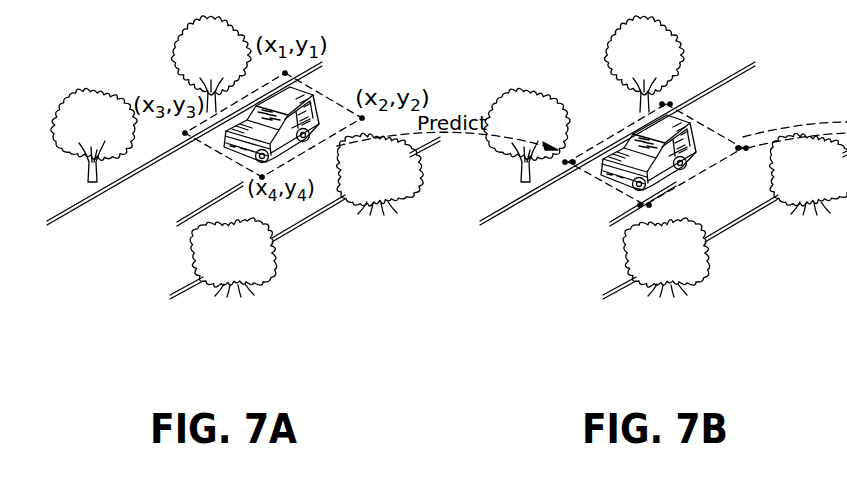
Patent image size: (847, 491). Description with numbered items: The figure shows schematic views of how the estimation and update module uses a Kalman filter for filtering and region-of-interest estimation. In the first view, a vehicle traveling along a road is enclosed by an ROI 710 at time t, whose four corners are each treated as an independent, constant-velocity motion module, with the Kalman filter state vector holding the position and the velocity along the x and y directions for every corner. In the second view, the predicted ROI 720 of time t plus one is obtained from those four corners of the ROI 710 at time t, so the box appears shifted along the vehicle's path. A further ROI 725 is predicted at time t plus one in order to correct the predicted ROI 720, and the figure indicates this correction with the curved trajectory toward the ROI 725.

In FIG. 7A, the ROI 710 is at (228, 153).
In FIG. 7B, the predicted ROI 720 is at (615, 128).
In FIG. 7B, the ROI 725 is at (708, 128).